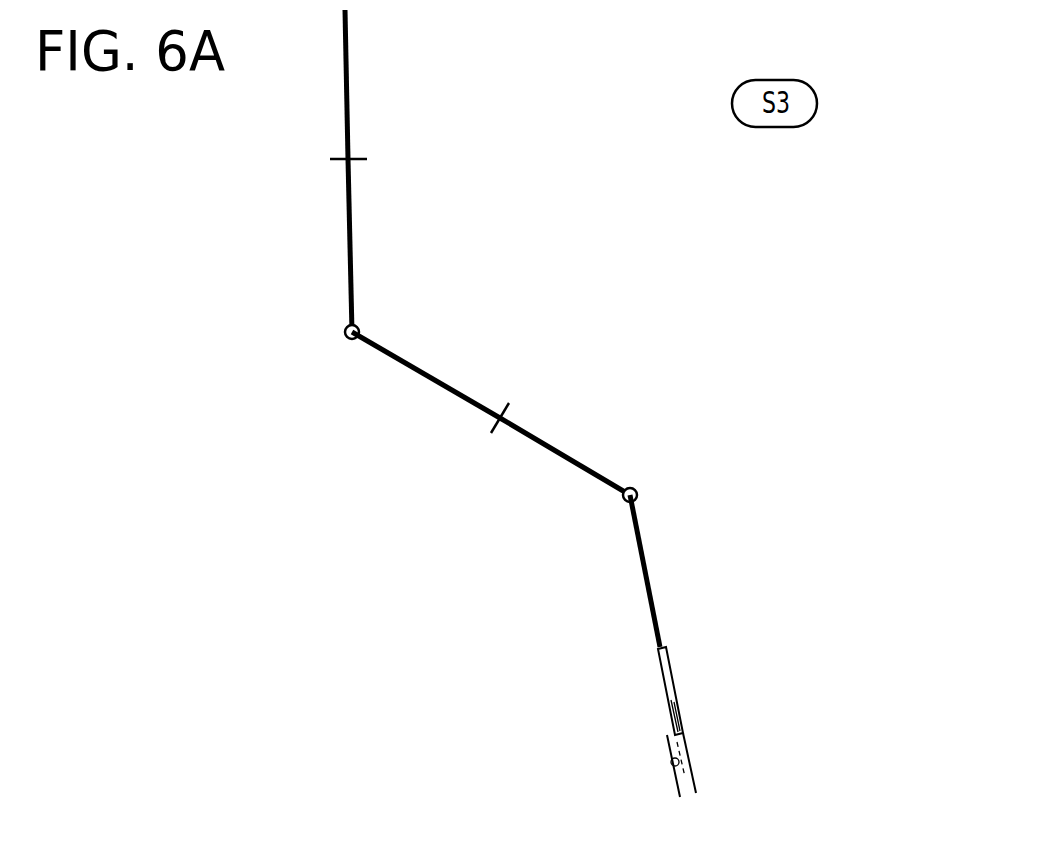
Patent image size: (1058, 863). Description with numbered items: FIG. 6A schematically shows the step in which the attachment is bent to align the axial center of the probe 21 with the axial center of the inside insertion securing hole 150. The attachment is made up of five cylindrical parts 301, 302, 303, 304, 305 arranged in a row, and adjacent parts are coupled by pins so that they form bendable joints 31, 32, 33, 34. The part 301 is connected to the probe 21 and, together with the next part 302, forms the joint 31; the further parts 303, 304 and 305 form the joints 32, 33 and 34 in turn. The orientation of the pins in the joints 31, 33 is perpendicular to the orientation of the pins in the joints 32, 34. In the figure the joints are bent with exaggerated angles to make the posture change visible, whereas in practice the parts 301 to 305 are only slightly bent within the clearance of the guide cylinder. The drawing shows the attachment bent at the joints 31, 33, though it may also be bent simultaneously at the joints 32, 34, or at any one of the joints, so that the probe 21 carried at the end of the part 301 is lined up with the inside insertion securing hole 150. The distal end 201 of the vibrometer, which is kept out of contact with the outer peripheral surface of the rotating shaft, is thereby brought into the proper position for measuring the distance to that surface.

The cylindrical part 305 is at (350, 91).
The cylindrical part 304 is at (356, 242).
The joint 34 is at (330, 159).
The joint 33 is at (344, 333).
The cylindrical part 303 is at (404, 365).
The joint 32 is at (504, 403).
The cylindrical part 302 is at (562, 458).
The joint 31 is at (633, 486).
The cylindrical part 301 is at (651, 582).
The probe 21 is at (671, 672).
The distal end 201 is at (688, 745).
The inside insertion securing hole 150 is at (672, 758).